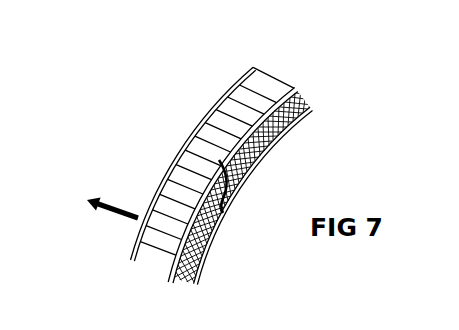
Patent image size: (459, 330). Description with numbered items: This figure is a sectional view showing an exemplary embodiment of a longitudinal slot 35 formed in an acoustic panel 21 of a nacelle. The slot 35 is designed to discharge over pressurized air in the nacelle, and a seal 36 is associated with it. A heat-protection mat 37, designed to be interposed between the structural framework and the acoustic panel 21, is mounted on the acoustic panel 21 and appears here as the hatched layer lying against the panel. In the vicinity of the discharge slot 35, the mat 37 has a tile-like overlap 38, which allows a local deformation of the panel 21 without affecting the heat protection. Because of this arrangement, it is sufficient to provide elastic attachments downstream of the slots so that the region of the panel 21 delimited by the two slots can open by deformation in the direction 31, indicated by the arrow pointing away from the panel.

The acoustic panel 21 is at (235, 101).
The direction of deformation 31 is at (93, 199).
The longitudinal slot 35 is at (175, 132).
The seal 36 is at (200, 148).
The heat-protection mat 37 is at (282, 137).
The tile-like overlap 38 is at (232, 216).